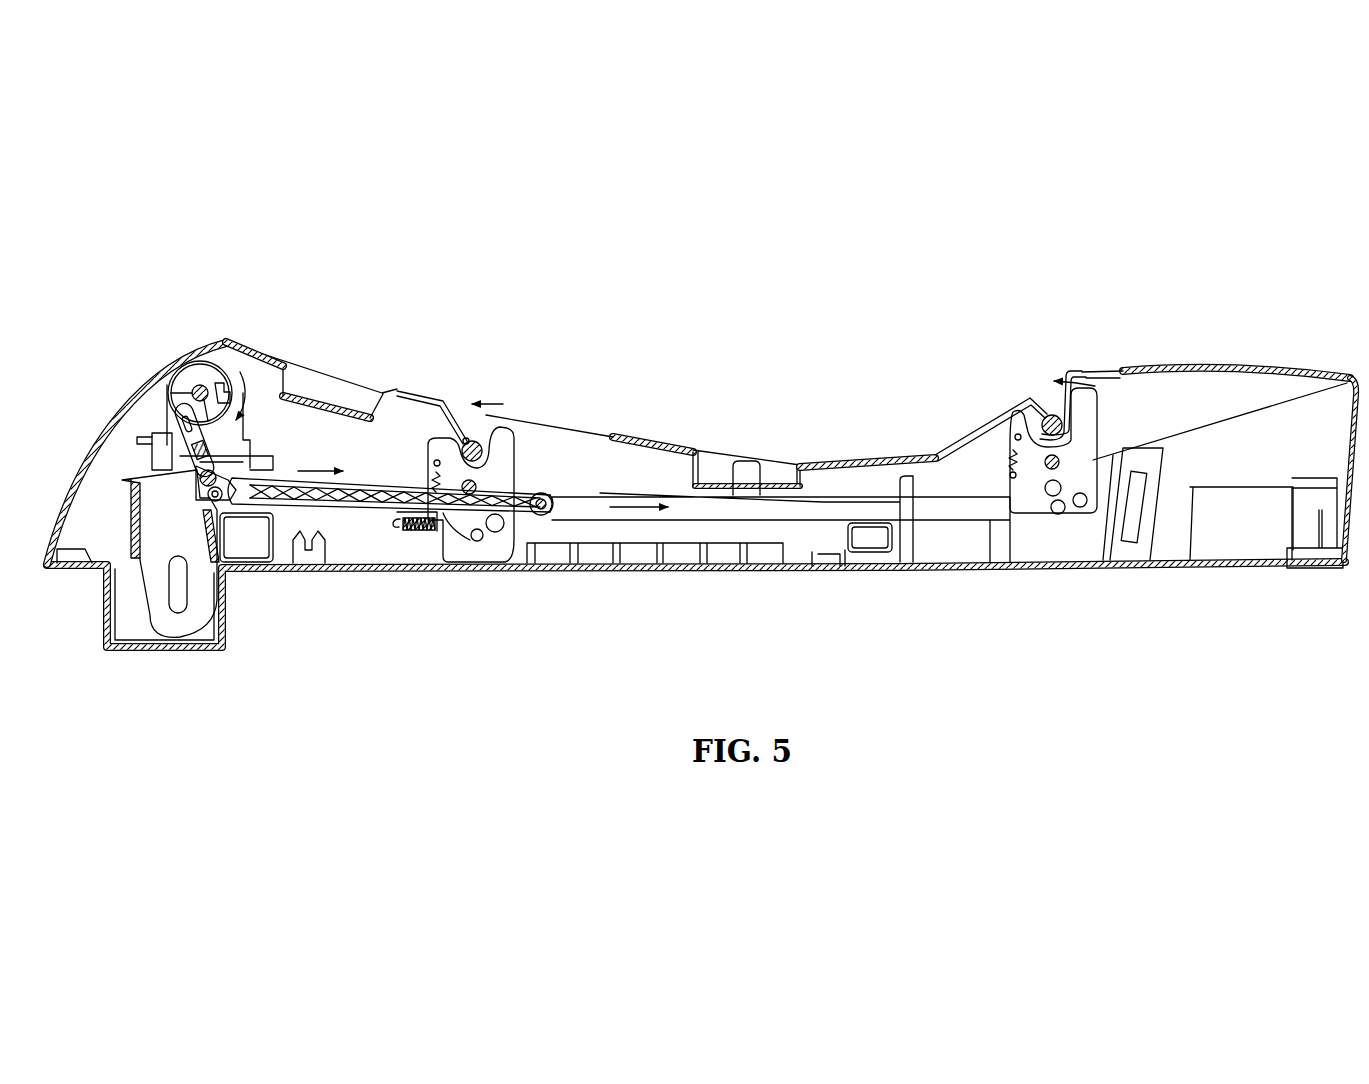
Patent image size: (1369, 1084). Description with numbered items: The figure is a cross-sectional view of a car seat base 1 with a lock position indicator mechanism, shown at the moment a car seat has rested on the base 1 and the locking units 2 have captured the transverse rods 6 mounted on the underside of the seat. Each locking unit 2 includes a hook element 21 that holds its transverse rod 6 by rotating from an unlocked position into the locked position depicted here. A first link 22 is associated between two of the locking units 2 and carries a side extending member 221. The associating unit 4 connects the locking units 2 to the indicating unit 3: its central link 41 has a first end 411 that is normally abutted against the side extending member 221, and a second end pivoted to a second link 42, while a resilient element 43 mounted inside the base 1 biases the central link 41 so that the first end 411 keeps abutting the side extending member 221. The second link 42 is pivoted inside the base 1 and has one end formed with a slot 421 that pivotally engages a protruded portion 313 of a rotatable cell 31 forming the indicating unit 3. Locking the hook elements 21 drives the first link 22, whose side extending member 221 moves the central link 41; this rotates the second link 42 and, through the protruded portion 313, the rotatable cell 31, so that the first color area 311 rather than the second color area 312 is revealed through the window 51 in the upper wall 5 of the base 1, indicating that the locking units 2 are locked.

The base 1 is at (878, 572).
The locking unit 2 is at (791, 443).
The hook element 21 is at (515, 465).
The first link 22 is at (718, 521).
The side extending member 221 is at (547, 497).
The indicating unit 3 is at (186, 409).
The rotatable cell 31 is at (169, 371).
The first color area 311 is at (200, 361).
The second color area 312 is at (237, 403).
The protruded portion 313 is at (178, 416).
The associating unit 4 is at (315, 526).
The central link 41 is at (403, 527).
The first end 411 is at (544, 516).
The second link 42 is at (144, 452).
The slot 421 is at (188, 443).
The resilient element 43 is at (427, 569).
The upper wall 5 is at (850, 463).
The window 51 is at (206, 339).
The transverse rod 6 is at (465, 440).